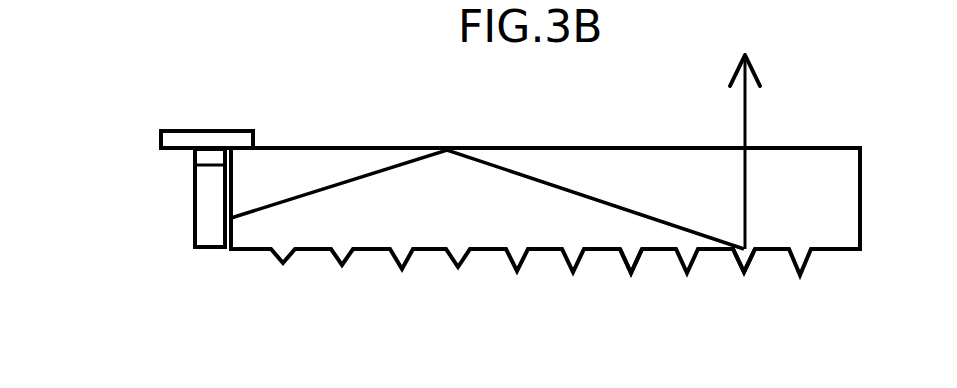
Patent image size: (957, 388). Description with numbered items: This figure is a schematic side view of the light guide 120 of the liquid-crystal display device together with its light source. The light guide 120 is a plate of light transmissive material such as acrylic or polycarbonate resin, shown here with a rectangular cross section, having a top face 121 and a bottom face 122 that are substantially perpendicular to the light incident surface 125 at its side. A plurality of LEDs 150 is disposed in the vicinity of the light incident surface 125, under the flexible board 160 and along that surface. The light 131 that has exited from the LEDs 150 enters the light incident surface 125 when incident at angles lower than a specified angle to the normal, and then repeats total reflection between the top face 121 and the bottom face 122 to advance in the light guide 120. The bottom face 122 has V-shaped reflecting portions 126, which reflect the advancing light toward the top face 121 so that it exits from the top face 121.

The light guide 120 is at (433, 240).
The top face 121 is at (628, 147).
The bottom face 122 is at (651, 252).
The light incident surface 125 is at (228, 183).
The reflecting portions 126 is at (737, 252).
The light 131 is at (328, 185).
The LEDs 150 is at (212, 249).
The flexible board 160 is at (210, 137).